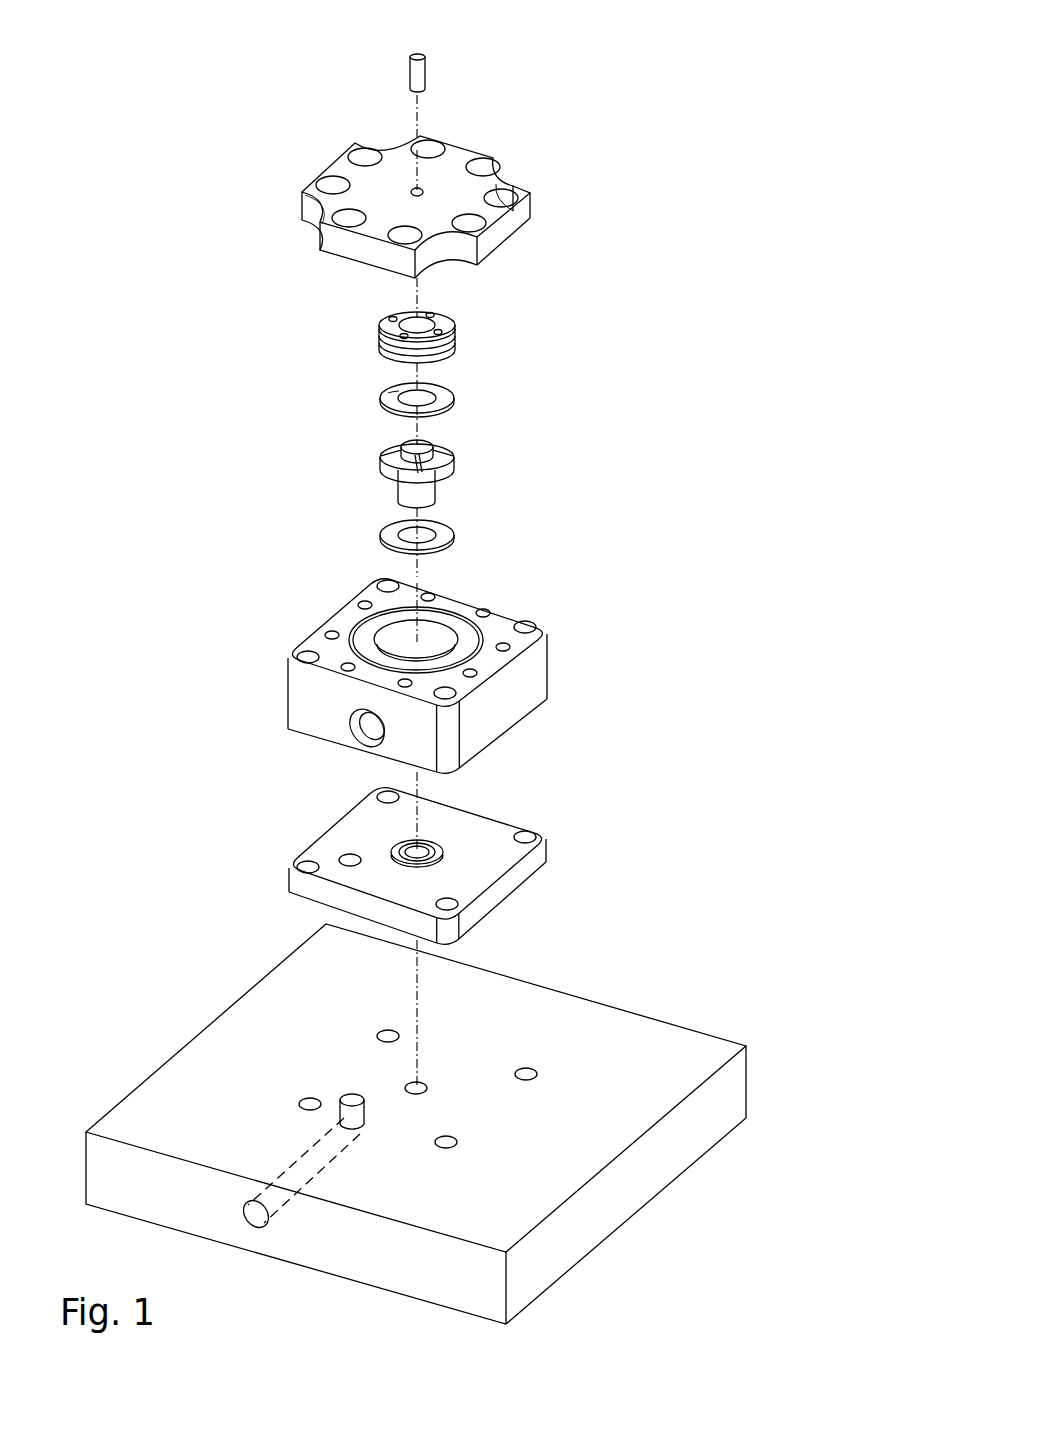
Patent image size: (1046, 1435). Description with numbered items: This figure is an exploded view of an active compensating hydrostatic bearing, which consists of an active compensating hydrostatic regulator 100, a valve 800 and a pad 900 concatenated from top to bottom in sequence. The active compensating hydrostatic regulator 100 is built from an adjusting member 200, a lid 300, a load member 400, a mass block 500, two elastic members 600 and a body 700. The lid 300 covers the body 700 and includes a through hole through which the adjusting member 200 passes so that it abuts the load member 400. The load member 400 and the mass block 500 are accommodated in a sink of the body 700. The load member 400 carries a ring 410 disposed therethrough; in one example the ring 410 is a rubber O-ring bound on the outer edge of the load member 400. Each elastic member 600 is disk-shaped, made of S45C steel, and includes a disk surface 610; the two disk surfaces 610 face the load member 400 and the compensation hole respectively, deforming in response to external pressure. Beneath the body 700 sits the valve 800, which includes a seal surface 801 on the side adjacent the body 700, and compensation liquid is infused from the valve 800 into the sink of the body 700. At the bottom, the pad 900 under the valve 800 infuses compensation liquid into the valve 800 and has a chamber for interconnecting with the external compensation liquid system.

The active compensating hydrostatic regulator 100 is at (683, 50).
The adjusting member 200 is at (426, 77).
The lid 300 is at (530, 205).
The load member 400 is at (440, 318).
The ring 410 is at (455, 335).
The mass block 500 is at (457, 468).
The elastic member 600 is at (455, 405).
The disk surface 610 is at (388, 395).
The body 700 is at (527, 665).
The valve 800 is at (510, 885).
The seal surface 801 is at (433, 843).
The pad 900 is at (652, 1164).